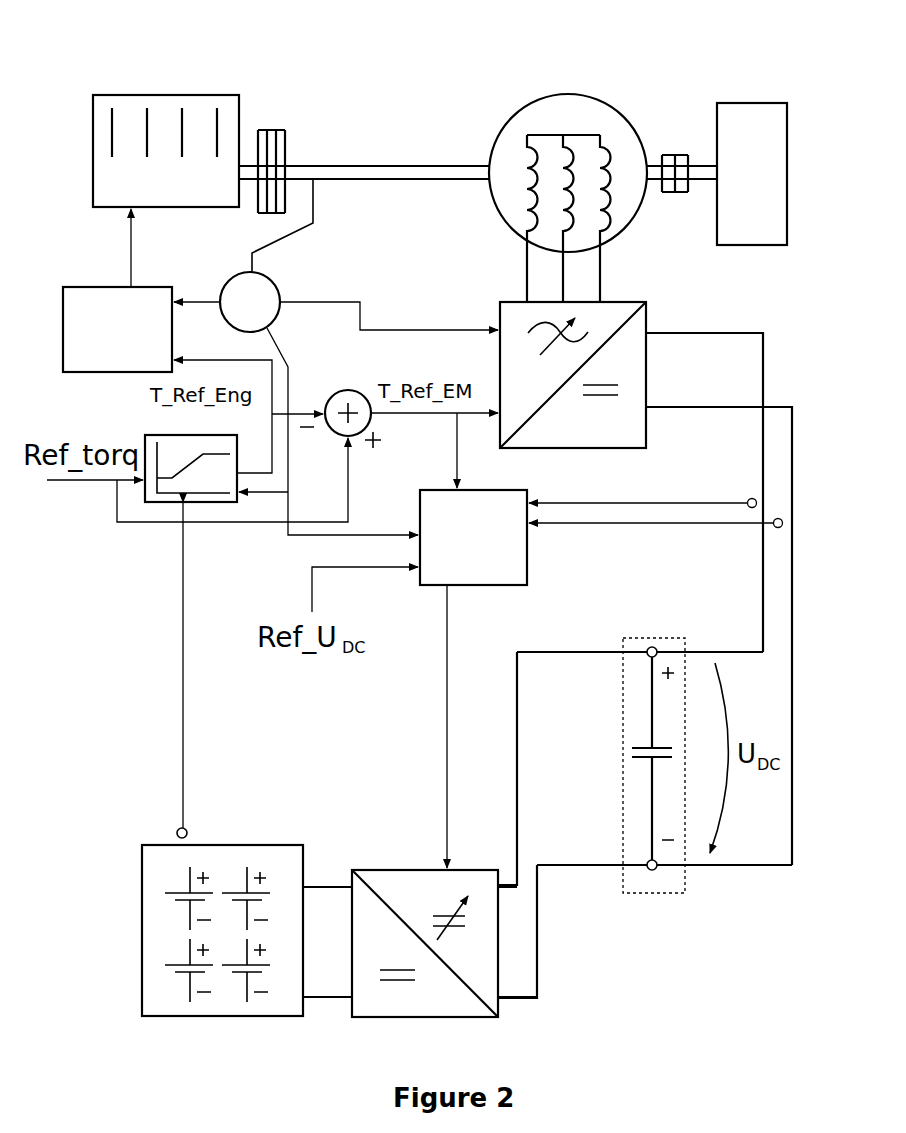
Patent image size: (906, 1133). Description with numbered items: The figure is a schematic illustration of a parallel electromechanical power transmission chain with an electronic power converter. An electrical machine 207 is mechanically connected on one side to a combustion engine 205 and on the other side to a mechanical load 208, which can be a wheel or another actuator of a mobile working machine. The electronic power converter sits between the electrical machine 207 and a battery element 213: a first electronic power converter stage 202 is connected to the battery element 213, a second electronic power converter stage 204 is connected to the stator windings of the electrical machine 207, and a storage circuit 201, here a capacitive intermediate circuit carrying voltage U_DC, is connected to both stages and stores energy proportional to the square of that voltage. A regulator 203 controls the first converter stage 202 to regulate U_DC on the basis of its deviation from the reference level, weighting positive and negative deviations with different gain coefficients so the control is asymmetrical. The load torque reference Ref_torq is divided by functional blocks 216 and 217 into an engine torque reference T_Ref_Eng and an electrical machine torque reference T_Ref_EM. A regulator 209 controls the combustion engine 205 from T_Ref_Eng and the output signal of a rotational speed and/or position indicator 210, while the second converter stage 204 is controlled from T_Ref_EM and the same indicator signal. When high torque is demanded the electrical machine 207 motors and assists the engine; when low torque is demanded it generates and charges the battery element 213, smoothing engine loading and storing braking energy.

The storage circuit 201 is at (655, 638).
The first electronic power converter stage 202 is at (368, 870).
The regulator 203 is at (473, 537).
The second electronic power converter stage 204 is at (636, 300).
The combustion engine 205 is at (166, 151).
The electrical machine 207 is at (560, 95).
The mechanical load 208 is at (752, 174).
The regulator 209 is at (117, 329).
The rotational speed and/or position indicator 210 is at (250, 302).
The battery element 213 is at (207, 845).
The functional block 216 is at (175, 432).
The functional block 217 is at (345, 390).